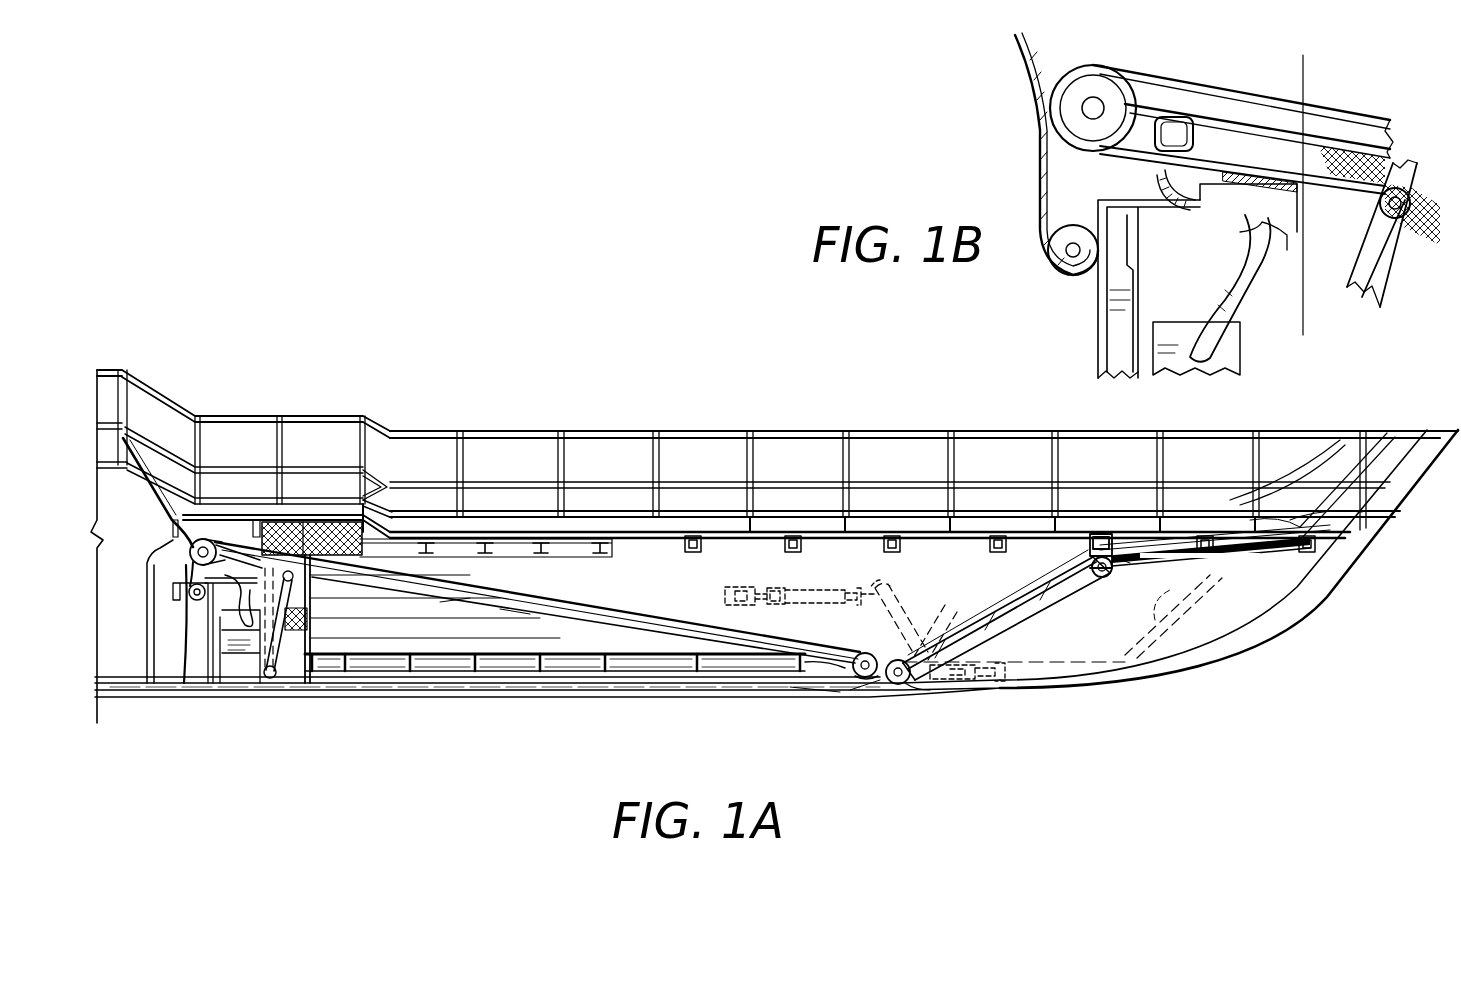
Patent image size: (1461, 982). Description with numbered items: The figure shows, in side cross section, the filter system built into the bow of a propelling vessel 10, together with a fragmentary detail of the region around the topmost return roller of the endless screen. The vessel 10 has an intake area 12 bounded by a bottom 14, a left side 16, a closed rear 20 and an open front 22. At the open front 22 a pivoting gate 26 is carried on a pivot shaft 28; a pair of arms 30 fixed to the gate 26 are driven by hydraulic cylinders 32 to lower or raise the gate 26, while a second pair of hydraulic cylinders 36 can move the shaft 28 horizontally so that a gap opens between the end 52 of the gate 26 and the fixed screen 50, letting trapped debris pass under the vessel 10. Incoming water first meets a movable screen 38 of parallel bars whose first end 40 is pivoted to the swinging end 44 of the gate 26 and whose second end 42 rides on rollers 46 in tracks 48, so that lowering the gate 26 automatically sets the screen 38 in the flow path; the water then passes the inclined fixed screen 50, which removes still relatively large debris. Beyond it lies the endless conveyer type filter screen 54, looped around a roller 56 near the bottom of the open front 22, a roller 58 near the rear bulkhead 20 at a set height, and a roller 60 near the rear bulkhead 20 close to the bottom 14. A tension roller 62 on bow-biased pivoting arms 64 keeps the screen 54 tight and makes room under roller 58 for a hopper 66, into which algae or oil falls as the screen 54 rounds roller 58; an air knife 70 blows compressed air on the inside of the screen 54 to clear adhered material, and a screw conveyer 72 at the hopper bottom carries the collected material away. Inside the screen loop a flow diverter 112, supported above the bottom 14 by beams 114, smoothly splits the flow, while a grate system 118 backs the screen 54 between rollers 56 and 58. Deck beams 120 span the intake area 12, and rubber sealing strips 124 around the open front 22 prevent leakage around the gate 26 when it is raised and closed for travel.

In FIG. 1A, the propelling vessel 10 is at (633, 415).
In FIG. 1A, the intake area 12 is at (534, 644).
In FIG. 1A, the bottom 14 is at (440, 690).
In FIG. 1A, the left side 16 is at (900, 583).
In FIG. 1A, the closed rear 20 is at (253, 673).
In FIG. 1A, the open front 22 is at (1006, 641).
In FIG. 1A, the pivoting gate 26 is at (1030, 613).
In FIG. 1A, the pivot shaft 28 is at (903, 688).
In FIG. 1A, the arms 30 is at (860, 625).
In FIG. 1A, the hydraulic cylinders 32 is at (785, 588).
In FIG. 1A, the second pair of hydraulic cylinders 36 is at (973, 686).
In FIG. 1A, the movable screen 38 is at (1183, 600).
In FIG. 1A, the first end 40 is at (1115, 578).
In FIG. 1A, the second end 42 is at (1262, 570).
In FIG. 1A, the swinging end 44 is at (1065, 572).
In FIG. 1A, the rollers 46 is at (1375, 517).
In FIG. 1A, the tracks 48 is at (1303, 557).
In FIG. 1A, the fixed screen 50 is at (1012, 610).
In FIG. 1A, the end 52 is at (920, 687).
In FIG. 1A, the endless conveyer type filter screen 54 is at (645, 612).
In FIG. 1B, the endless conveyer type filter screen 54 is at (1192, 75).
In FIG. 1A, the roller 56 is at (827, 687).
In FIG. 1A, the roller 58 is at (151, 550).
In FIG. 1A, the roller 60 is at (275, 680).
In FIG. 1A, the tension roller 62 is at (302, 612).
In FIG. 1B, the tension roller 62 is at (1413, 193).
In FIG. 1A, the pivoting arms 64 is at (305, 545).
In FIG. 1B, the pivoting arms 64 is at (1367, 280).
In FIG. 1A, the hopper 66 is at (180, 568).
In FIG. 1B, the hopper 66 is at (1030, 153).
In FIG. 1A, the air knife 70 is at (225, 540).
In FIG. 1B, the air knife 70 is at (1215, 135).
In FIG. 1A, the screw conveyer 72 is at (190, 606).
In FIG. 1B, the screw conveyer 72 is at (1067, 262).
In FIG. 1A, the flow diverter 112 is at (455, 606).
In FIG. 1A, the beams 114 is at (758, 699).
In FIG. 1A, the grate system 118 is at (516, 607).
In FIG. 1B, the grate system 118 is at (1347, 123).
In FIG. 1A, the deck beams 120 is at (693, 536).
In FIG. 1A, the rubber sealing strips 124 is at (1160, 545).